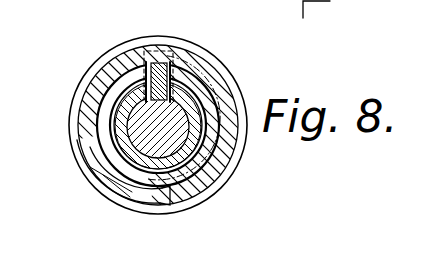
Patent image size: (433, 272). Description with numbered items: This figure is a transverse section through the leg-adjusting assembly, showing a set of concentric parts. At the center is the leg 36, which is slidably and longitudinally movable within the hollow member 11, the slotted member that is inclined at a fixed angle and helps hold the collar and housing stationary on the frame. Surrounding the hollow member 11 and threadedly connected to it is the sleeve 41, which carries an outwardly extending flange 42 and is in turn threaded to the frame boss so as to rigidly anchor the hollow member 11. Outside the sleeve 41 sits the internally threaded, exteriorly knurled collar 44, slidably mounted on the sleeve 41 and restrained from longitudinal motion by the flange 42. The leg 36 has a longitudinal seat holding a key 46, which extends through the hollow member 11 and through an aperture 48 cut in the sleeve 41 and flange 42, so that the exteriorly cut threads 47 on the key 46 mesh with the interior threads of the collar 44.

The hollow member 11 is at (197, 160).
The leg 36 is at (141, 122).
The sleeve 41 is at (181, 190).
The flange 42 is at (79, 77).
The collar 44 is at (214, 88).
The key 46 is at (187, 78).
The threads 47 is at (161, 63).
The aperture 48 is at (154, 50).